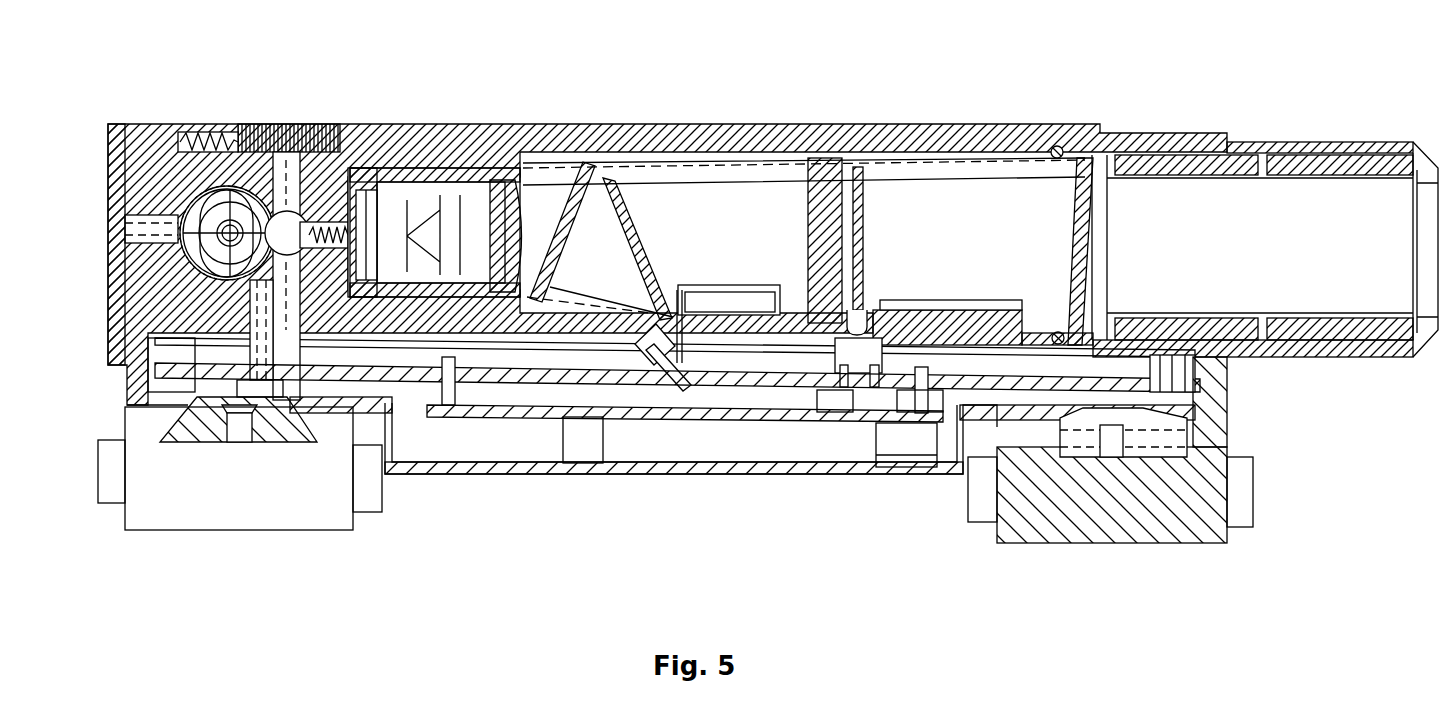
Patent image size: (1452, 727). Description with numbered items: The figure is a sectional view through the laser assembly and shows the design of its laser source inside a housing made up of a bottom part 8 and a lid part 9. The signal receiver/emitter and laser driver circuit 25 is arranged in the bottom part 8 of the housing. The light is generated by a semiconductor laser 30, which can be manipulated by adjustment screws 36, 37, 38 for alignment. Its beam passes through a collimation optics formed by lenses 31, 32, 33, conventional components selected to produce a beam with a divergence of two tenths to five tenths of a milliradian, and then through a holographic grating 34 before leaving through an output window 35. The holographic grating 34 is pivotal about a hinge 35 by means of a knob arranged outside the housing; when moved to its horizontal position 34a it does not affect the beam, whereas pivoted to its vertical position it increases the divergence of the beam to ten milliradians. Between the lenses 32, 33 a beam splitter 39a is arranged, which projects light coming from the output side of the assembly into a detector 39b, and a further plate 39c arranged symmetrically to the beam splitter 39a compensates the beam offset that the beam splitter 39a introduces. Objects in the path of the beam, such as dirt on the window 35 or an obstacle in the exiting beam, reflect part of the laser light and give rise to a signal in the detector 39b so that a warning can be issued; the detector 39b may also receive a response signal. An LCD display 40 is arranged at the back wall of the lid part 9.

The bottom part 8 is at (735, 473).
The lid part 9 is at (975, 130).
The signal receiver/emitter and laser driver circuit 25 is at (520, 385).
The semiconductor laser 30 is at (392, 210).
The lens 31 is at (482, 178).
The lens 32 is at (541, 185).
The lens 33 is at (806, 212).
The holographic grating 34 is at (863, 200).
The horizontal position of holographic grating 34a is at (933, 330).
The output window 35 is at (1078, 152).
The adjustment screw 36 is at (172, 192).
The adjustment screw 37 is at (332, 217).
The adjustment screw 38 is at (280, 150).
The beam splitter 39a is at (565, 182).
The detector 39b is at (650, 365).
The plate 39c is at (652, 195).
The LCD display 40 is at (113, 127).